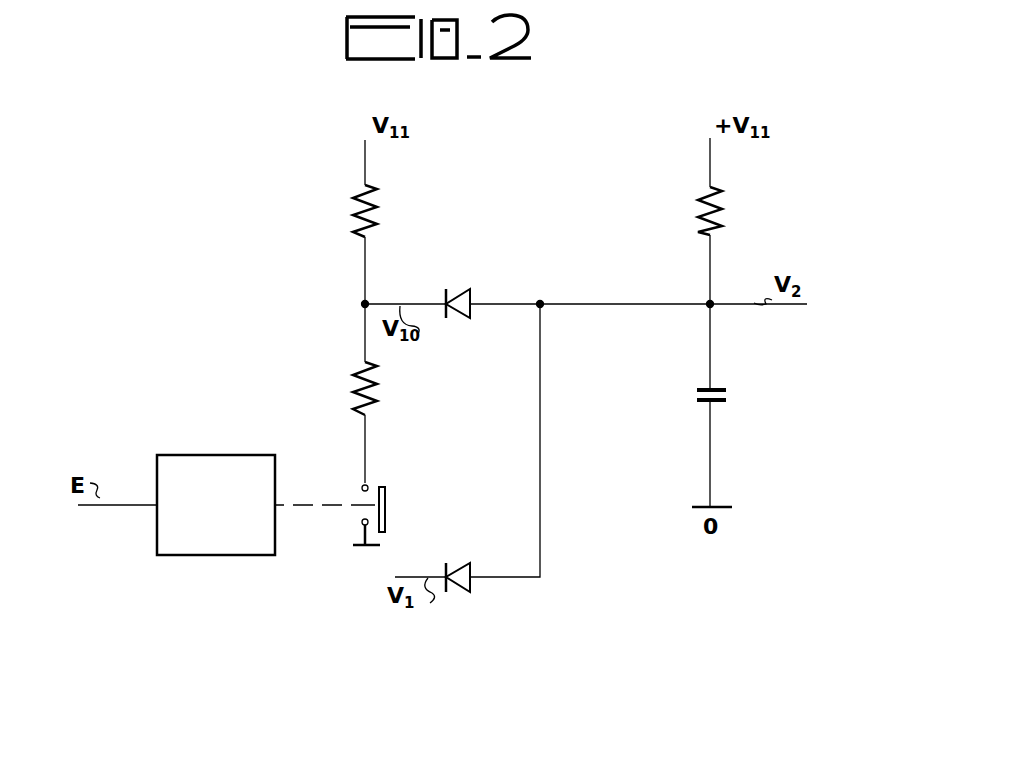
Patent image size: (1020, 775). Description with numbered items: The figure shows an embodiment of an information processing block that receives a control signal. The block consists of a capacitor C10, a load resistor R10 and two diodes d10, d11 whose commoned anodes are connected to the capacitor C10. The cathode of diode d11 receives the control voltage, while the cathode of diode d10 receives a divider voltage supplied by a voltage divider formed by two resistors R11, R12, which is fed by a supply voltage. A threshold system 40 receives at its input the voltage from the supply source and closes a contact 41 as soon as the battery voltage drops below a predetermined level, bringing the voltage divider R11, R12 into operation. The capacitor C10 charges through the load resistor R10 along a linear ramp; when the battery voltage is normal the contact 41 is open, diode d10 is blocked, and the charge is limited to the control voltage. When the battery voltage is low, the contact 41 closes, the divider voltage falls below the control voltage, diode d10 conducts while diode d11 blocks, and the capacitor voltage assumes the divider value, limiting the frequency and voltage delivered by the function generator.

The threshold system 40 is at (197, 455).
The contact 41 is at (386, 502).
The load resistor R10 is at (722, 205).
The resistor R11 is at (350, 206).
The resistor R12 is at (352, 384).
The capacitor C10 is at (722, 386).
The diode d10 is at (458, 290).
The diode d11 is at (458, 565).